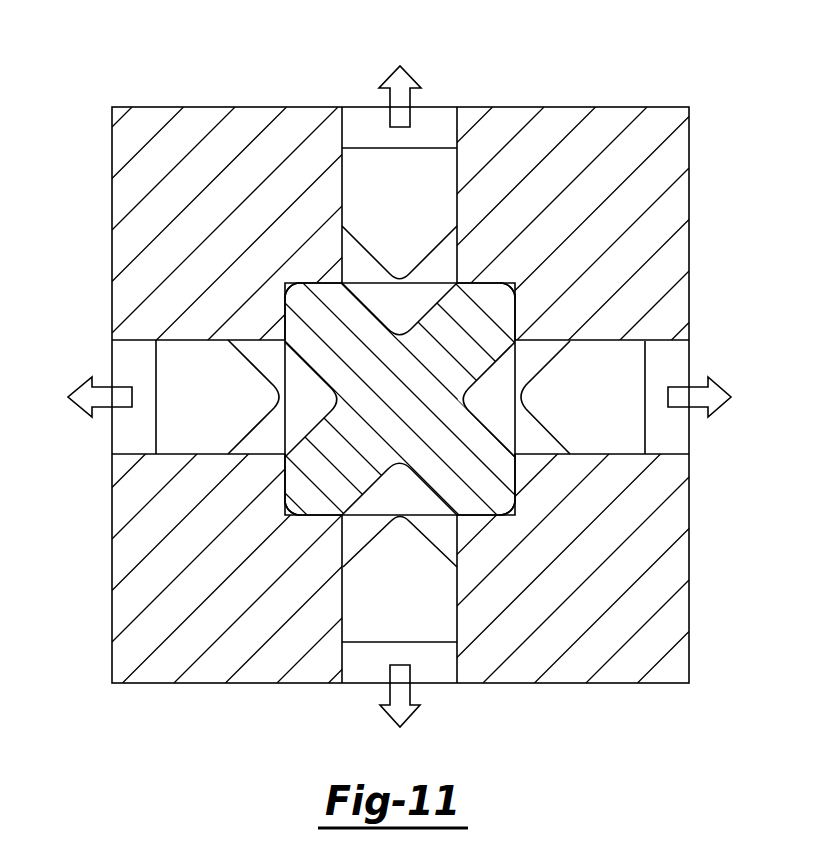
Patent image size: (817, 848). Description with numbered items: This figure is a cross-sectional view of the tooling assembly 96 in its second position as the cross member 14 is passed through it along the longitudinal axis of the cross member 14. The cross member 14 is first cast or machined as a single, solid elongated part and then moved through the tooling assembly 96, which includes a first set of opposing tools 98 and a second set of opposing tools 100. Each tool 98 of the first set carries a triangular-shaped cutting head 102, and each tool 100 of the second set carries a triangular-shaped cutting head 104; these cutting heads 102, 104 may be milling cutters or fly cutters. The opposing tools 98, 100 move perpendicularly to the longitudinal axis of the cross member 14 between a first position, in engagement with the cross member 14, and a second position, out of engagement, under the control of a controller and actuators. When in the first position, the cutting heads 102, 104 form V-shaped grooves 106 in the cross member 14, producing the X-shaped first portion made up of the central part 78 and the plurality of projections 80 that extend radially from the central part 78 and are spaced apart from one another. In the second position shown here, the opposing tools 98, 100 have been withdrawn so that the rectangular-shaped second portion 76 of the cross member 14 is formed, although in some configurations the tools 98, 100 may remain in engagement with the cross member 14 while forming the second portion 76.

The cross member 14 is at (377, 403).
The second portion 76 is at (302, 418).
The central part 78 is at (391, 403).
The projections 80 is at (300, 307).
The tooling assembly 96 is at (400, 356).
The first set of opposing tools 98 is at (155, 435).
The second set of opposing tools 100 is at (440, 148).
The cutting head 102 is at (240, 367).
The cutting head 104 is at (426, 246).
The V-shaped grooves 106 is at (370, 312).